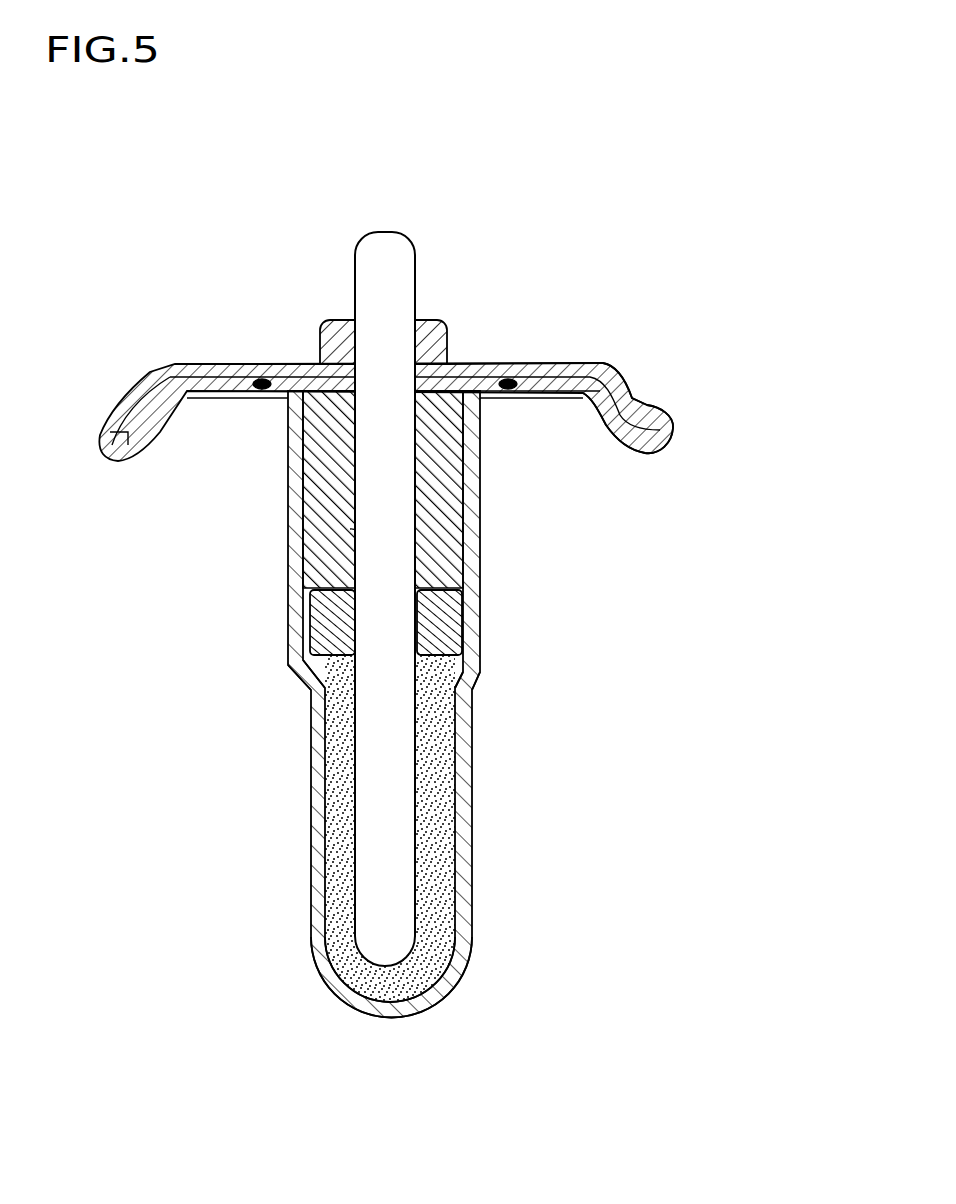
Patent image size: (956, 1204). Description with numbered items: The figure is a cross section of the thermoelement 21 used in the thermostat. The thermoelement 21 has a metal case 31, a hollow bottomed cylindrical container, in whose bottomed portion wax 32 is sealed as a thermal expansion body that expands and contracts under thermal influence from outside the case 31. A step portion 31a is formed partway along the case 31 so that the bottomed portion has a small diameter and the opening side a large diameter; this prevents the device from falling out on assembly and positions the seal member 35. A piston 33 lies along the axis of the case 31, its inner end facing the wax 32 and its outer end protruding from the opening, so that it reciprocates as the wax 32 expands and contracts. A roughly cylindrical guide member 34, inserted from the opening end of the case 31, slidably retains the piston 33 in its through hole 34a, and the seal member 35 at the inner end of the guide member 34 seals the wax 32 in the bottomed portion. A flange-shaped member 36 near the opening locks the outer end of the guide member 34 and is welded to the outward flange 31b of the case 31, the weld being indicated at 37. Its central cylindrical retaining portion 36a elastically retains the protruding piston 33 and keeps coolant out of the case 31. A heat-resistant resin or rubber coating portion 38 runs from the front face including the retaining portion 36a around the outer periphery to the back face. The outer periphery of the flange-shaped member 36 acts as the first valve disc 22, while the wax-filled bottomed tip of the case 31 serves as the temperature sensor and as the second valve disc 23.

The thermoelement 21 is at (545, 716).
The first valve disc 22 is at (572, 350).
The second valve disc 23 is at (473, 932).
The case 31 is at (480, 603).
The step portion 31a is at (483, 682).
The outward flange 31b is at (247, 396).
The wax 32 is at (445, 833).
The piston 33 is at (363, 287).
The guide member 34 is at (478, 515).
The through hole 34a is at (350, 529).
The seal member 35 is at (465, 630).
The flange-shaped member 36 is at (180, 367).
The retaining portion 36a is at (323, 337).
The weld portion 37 is at (504, 382).
The coating portion 38 is at (646, 430).